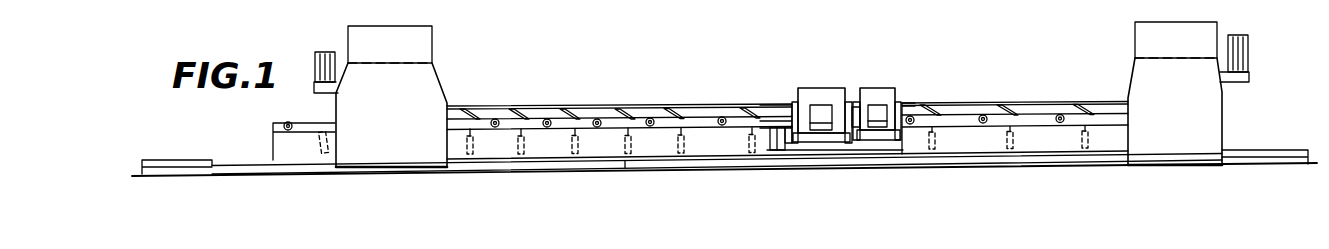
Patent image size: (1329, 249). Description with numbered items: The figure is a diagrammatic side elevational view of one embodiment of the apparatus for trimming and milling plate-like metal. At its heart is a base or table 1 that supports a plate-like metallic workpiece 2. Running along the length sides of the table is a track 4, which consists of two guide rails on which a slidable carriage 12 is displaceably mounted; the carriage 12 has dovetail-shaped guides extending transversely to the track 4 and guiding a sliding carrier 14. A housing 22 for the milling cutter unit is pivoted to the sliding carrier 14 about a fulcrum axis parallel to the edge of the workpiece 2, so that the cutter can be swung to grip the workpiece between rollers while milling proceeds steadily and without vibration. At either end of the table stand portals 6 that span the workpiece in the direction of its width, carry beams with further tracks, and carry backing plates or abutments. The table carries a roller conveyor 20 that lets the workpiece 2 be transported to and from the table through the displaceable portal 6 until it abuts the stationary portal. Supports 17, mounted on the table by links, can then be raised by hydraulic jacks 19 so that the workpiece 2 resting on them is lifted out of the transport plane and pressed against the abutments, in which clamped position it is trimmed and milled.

The base or table 1 is at (950, 142).
The plate-like metallic workpiece 2 is at (698, 103).
The track 4 is at (1053, 163).
The portal 6 is at (417, 95).
The slidable carriage 12 is at (815, 146).
The sliding carrier 14 is at (790, 105).
The support 17 is at (615, 108).
The hydraulic jack 19 is at (680, 143).
The roller conveyor 20 is at (597, 127).
The housing for the milling cutter unit 22 is at (823, 97).